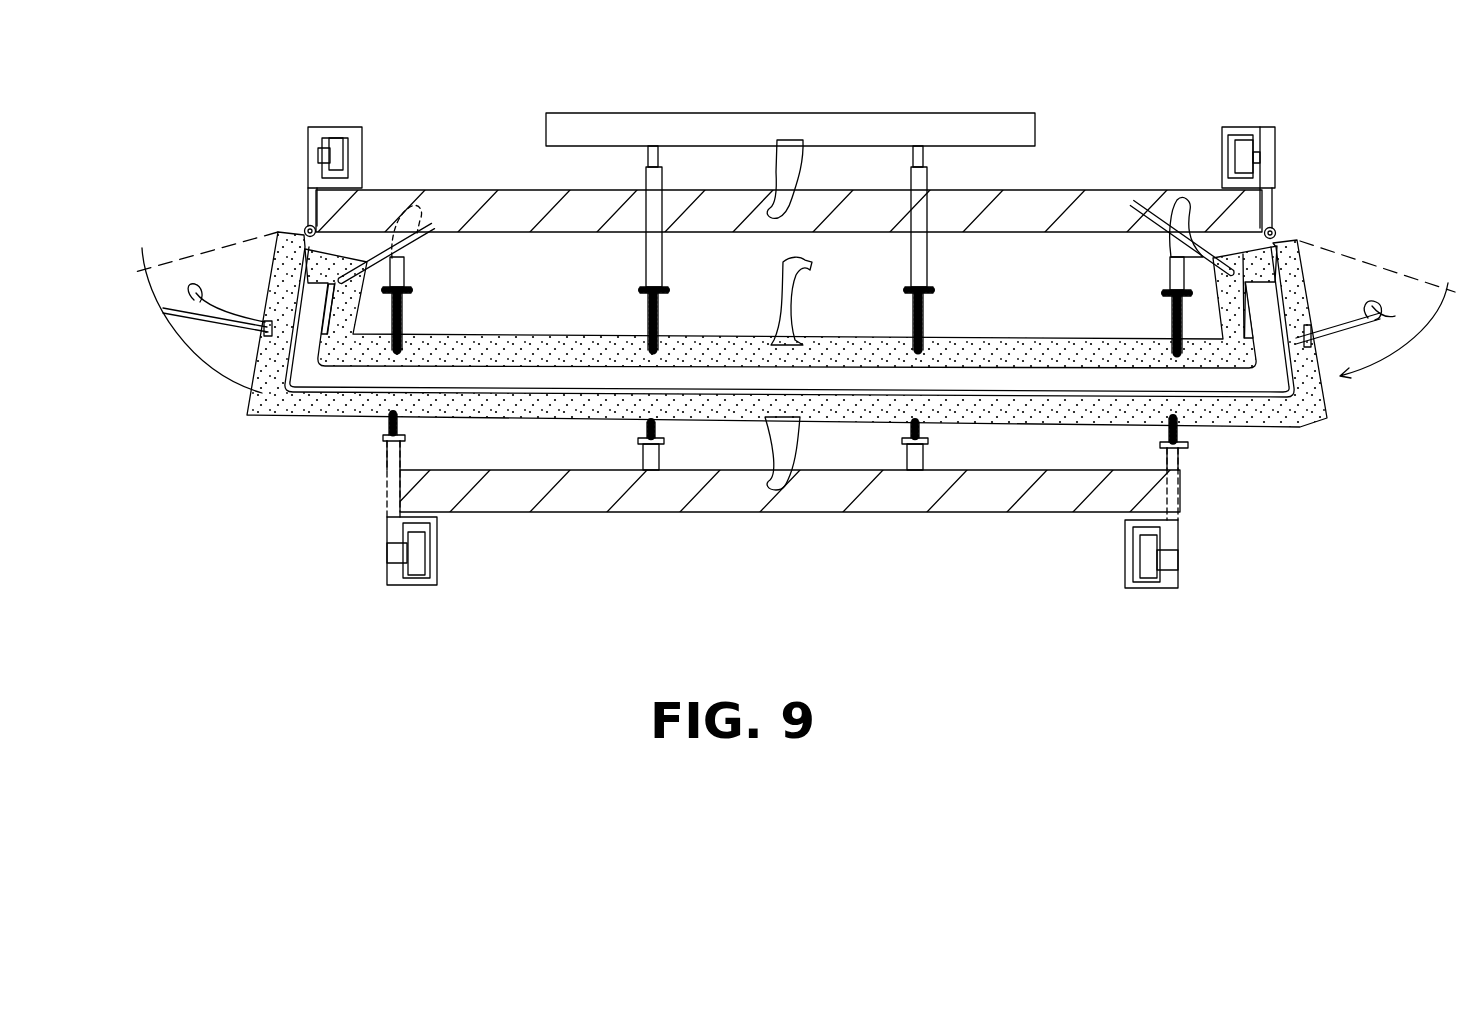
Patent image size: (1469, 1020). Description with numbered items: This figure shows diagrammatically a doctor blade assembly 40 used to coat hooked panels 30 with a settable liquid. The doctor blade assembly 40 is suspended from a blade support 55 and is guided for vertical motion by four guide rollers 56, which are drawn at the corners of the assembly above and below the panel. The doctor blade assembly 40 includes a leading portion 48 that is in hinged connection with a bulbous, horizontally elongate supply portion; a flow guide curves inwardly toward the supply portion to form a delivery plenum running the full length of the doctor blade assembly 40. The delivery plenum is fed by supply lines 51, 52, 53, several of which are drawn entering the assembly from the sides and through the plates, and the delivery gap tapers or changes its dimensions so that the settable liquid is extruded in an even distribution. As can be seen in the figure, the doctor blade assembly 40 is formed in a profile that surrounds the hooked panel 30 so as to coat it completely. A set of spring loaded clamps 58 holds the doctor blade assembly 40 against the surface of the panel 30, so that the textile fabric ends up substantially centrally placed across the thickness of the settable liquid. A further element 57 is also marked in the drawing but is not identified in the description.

The hooked panel 30 is at (487, 380).
The doctor blade assembly 40 is at (792, 355).
The leading portion 48 is at (287, 307).
The supply line 51 is at (190, 328).
The supply line 52 is at (785, 291).
The supply line 53 is at (360, 268).
The blade support 55 is at (1040, 200).
The guide roller 56 is at (338, 142).
The right pivoting side clamp 57 is at (1362, 313).
The spring loaded clamp 58 is at (648, 318).